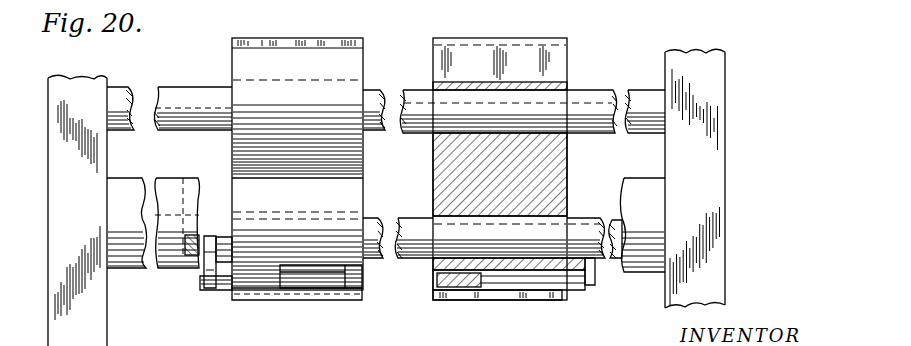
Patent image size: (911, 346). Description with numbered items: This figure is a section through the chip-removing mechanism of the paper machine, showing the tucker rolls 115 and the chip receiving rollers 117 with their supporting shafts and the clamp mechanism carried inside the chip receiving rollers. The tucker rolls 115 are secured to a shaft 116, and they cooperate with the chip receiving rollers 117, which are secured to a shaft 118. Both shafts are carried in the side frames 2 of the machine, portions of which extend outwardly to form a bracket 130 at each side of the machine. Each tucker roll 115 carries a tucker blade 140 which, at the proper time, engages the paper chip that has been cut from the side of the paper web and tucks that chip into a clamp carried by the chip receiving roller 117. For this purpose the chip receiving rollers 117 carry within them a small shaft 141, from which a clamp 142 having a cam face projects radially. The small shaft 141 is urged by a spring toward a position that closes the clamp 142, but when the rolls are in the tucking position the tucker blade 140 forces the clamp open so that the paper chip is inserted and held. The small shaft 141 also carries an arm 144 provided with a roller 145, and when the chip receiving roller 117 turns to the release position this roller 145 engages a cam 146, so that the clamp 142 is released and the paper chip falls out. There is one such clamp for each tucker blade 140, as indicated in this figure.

The side frames 2 is at (40, 226).
The bracket 130 is at (48, 122).
The tucker roll 115 is at (353, 66).
The shaft 116 is at (181, 99).
The chip receiving roller 117 is at (353, 197).
The shaft 118 is at (411, 256).
The tucker blade 140 is at (300, 23).
The small shaft 141 is at (214, 291).
The clamp 142 is at (299, 300).
The arm 144 is at (206, 278).
The roller 145 is at (186, 258).
The cam 146 is at (200, 166).